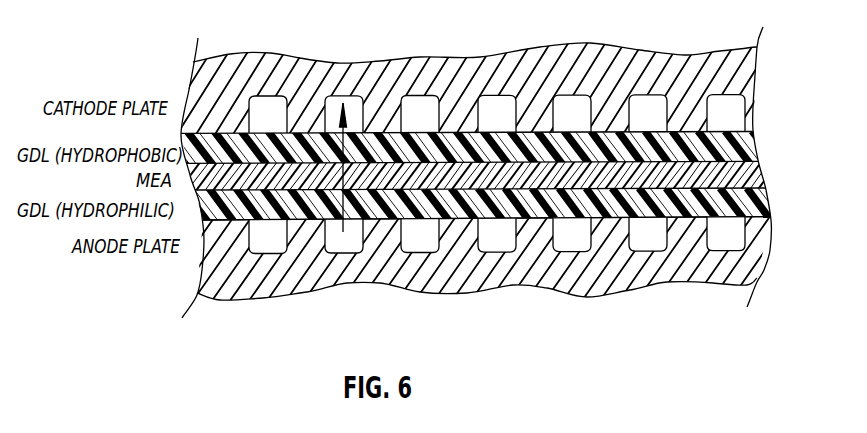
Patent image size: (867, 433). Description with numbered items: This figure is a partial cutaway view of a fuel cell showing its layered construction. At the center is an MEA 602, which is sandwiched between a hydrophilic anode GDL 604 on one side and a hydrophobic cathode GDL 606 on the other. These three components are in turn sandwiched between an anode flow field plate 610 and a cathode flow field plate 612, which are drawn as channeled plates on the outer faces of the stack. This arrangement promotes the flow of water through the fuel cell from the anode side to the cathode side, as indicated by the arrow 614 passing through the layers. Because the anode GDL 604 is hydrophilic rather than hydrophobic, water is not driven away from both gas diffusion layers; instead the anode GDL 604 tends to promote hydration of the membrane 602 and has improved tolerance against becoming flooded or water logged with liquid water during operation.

The MEA 602 is at (754, 170).
The hydrophilic anode GDL 604 is at (757, 197).
The hydrophobic cathode GDL 606 is at (746, 140).
The anode flow field plate 610 is at (440, 276).
The cathode flow field plate 612 is at (428, 66).
The arrow 614 is at (347, 106).